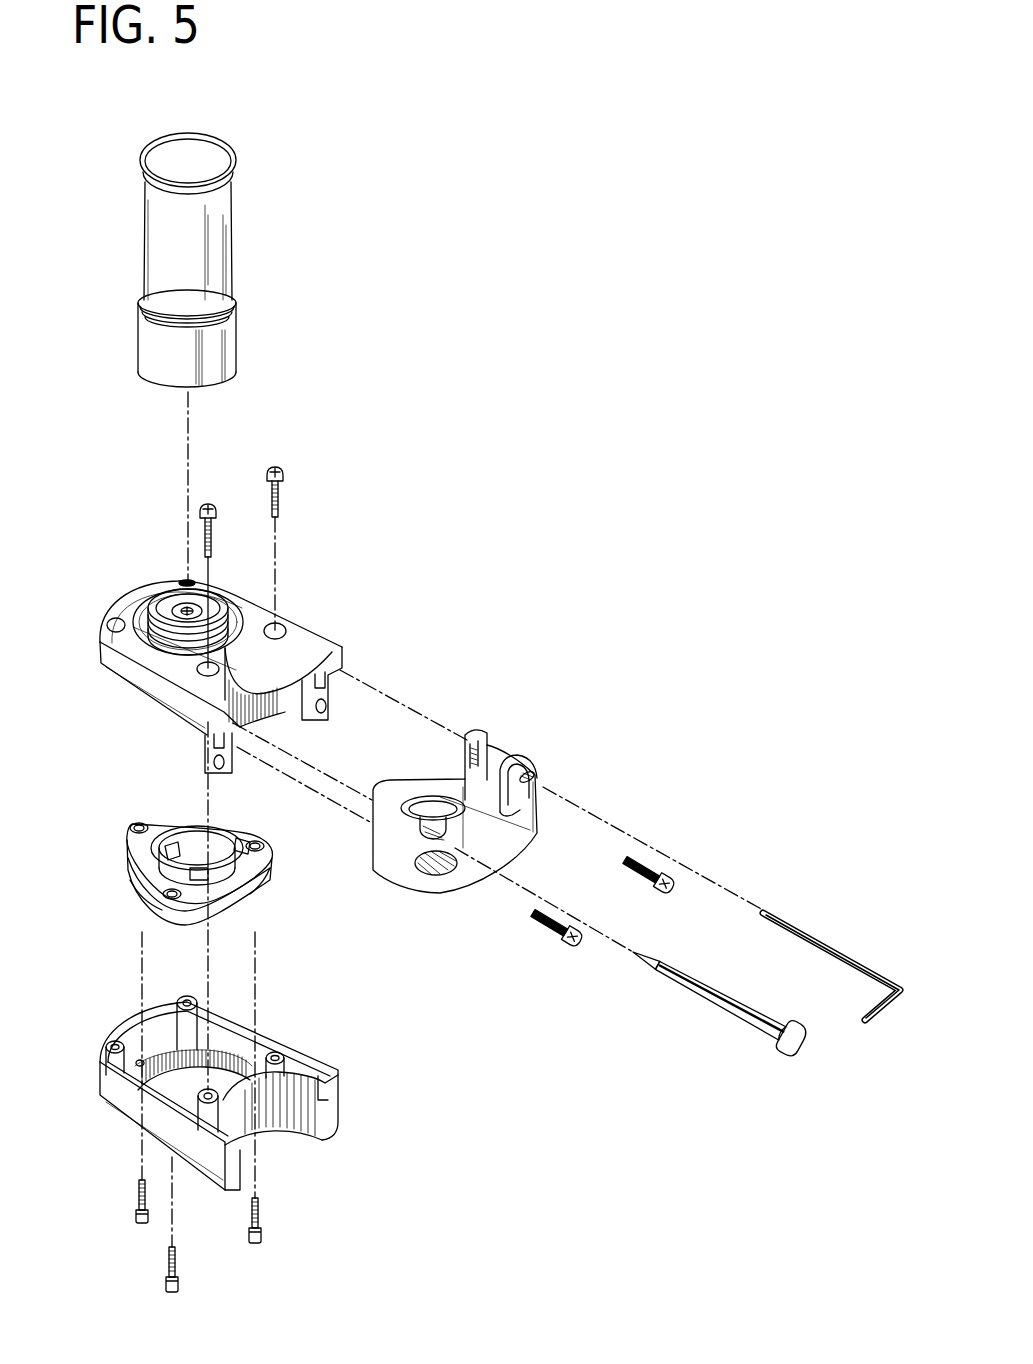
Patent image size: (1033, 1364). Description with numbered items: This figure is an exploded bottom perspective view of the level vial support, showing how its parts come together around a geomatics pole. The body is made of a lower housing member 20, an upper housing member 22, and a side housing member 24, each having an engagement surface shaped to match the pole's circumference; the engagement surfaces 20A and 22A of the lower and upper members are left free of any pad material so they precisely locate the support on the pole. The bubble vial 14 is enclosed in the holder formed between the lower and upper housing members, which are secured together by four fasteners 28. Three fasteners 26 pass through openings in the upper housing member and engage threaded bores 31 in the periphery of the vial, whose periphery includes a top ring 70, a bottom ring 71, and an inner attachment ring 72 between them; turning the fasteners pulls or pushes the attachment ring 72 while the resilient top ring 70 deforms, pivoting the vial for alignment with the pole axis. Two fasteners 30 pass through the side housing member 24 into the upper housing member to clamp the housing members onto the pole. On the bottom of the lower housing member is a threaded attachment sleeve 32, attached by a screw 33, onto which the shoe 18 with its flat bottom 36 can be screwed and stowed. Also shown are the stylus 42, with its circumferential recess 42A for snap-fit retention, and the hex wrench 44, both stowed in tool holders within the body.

The bubble vial 14 is at (135, 870).
The shoe 18 is at (232, 238).
The lower housing member 20 is at (147, 678).
The engagement surface of the lower housing member 20A is at (288, 660).
The upper housing member 22 is at (138, 1117).
The engagement surface of the upper housing member 22A is at (288, 1118).
The side housing member 24 is at (397, 862).
The fasteners 26 is at (138, 1230).
The fasteners 28 is at (284, 468).
The fasteners 30 is at (677, 883).
The threaded bores 31 is at (138, 827).
The threaded attachment sleeve 32 is at (142, 593).
The screw 33 is at (176, 604).
The flat bottom 36 is at (205, 153).
The stylus 42 is at (770, 1033).
The recess 42A is at (655, 967).
The hex wrench 44 is at (835, 955).
The top ring 70 is at (270, 872).
The bottom ring 71 is at (245, 840).
The attachment ring 72 is at (138, 895).